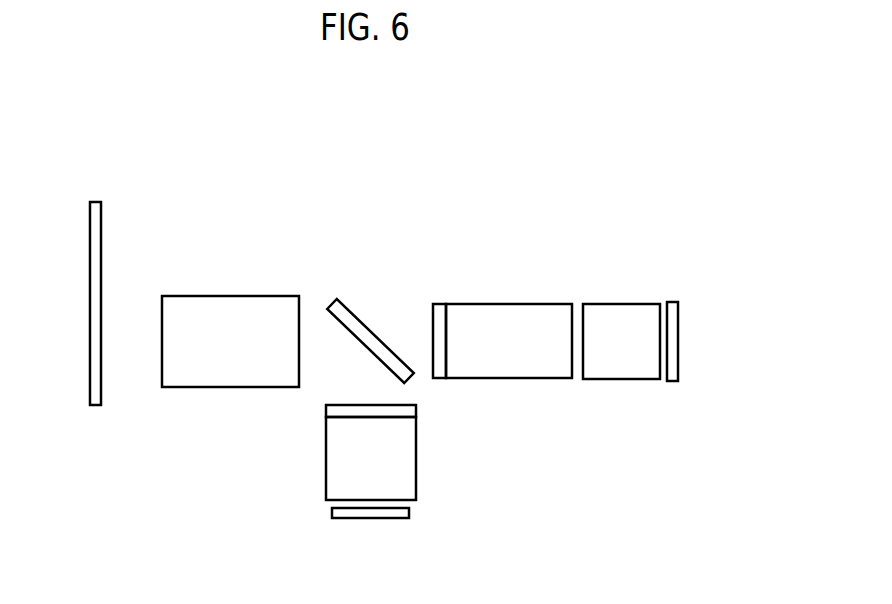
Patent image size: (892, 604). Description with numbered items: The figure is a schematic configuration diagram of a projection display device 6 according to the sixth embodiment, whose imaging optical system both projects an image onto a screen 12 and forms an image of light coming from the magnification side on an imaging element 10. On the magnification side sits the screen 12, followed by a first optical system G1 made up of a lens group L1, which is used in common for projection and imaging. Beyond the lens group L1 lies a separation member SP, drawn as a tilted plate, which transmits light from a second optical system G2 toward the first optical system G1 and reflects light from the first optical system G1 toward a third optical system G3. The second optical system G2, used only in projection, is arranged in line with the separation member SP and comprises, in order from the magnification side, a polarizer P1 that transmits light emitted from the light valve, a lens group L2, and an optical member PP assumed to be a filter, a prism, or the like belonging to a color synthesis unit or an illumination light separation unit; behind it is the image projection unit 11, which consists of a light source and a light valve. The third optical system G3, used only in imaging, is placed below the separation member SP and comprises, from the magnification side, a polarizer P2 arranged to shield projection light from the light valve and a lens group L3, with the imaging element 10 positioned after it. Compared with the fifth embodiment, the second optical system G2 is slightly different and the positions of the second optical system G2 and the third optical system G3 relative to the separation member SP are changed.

The projection display device 6 is at (388, 167).
The screen 12 is at (95, 344).
The first optical system G1 is at (258, 215).
The lens group L1 is at (230, 296).
The separation member SP is at (368, 325).
The second optical system G2 is at (642, 214).
The polarizer P1 is at (440, 303).
The lens group L2 is at (547, 304).
The optical member PP is at (622, 304).
The image projection unit 11 is at (672, 358).
The third optical system G3 is at (507, 397).
The polarizer P2 is at (416, 413).
The lens group L3 is at (417, 470).
The imaging element 10 is at (349, 513).